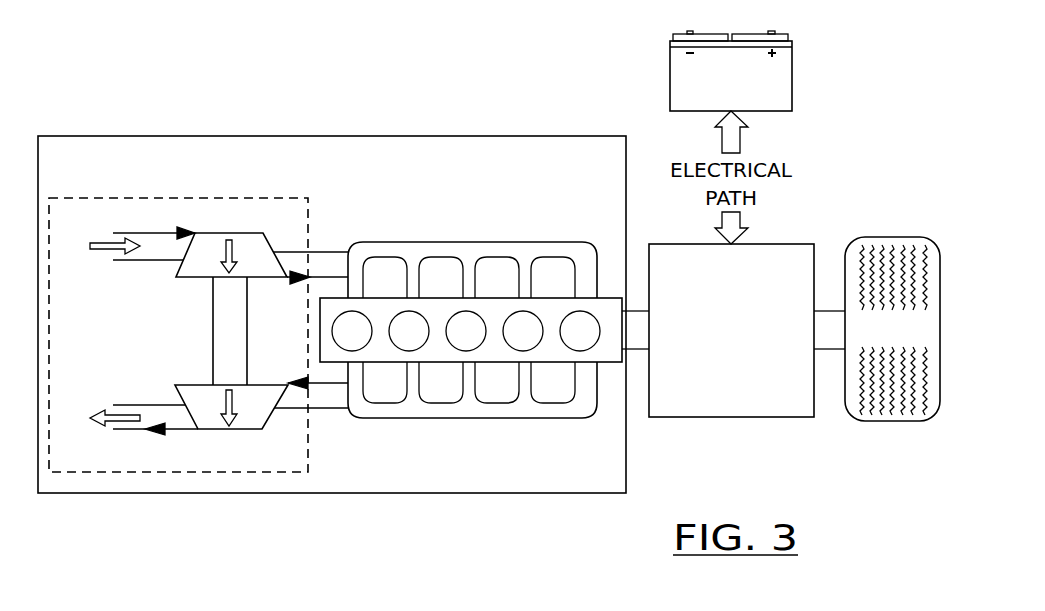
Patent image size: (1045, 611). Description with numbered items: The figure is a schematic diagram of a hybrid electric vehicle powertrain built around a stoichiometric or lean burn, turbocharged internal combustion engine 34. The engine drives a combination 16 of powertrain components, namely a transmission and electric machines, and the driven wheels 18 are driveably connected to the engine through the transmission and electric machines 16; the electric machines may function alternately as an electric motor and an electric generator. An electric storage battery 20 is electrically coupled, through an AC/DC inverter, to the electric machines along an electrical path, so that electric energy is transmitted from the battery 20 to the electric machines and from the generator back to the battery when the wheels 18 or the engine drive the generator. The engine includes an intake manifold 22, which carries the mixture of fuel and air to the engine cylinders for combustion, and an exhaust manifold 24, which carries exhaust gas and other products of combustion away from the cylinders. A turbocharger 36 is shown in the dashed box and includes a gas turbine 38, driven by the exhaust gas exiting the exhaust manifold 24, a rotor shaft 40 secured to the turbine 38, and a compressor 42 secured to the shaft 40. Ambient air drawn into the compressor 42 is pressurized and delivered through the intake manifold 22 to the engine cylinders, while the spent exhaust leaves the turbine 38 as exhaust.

The combination of transmission and electric machines 16 is at (793, 243).
The driven wheels 18 is at (890, 237).
The electric storage battery 20 is at (792, 80).
The intake manifold 22 is at (336, 252).
The exhaust manifold 24 is at (337, 410).
The turbocharged internal combustion engine 34 is at (418, 136).
The turbocharger 36 is at (283, 222).
The gas turbine 38 is at (250, 397).
The rotor shaft 40 is at (213, 333).
The compressor 42 is at (255, 270).